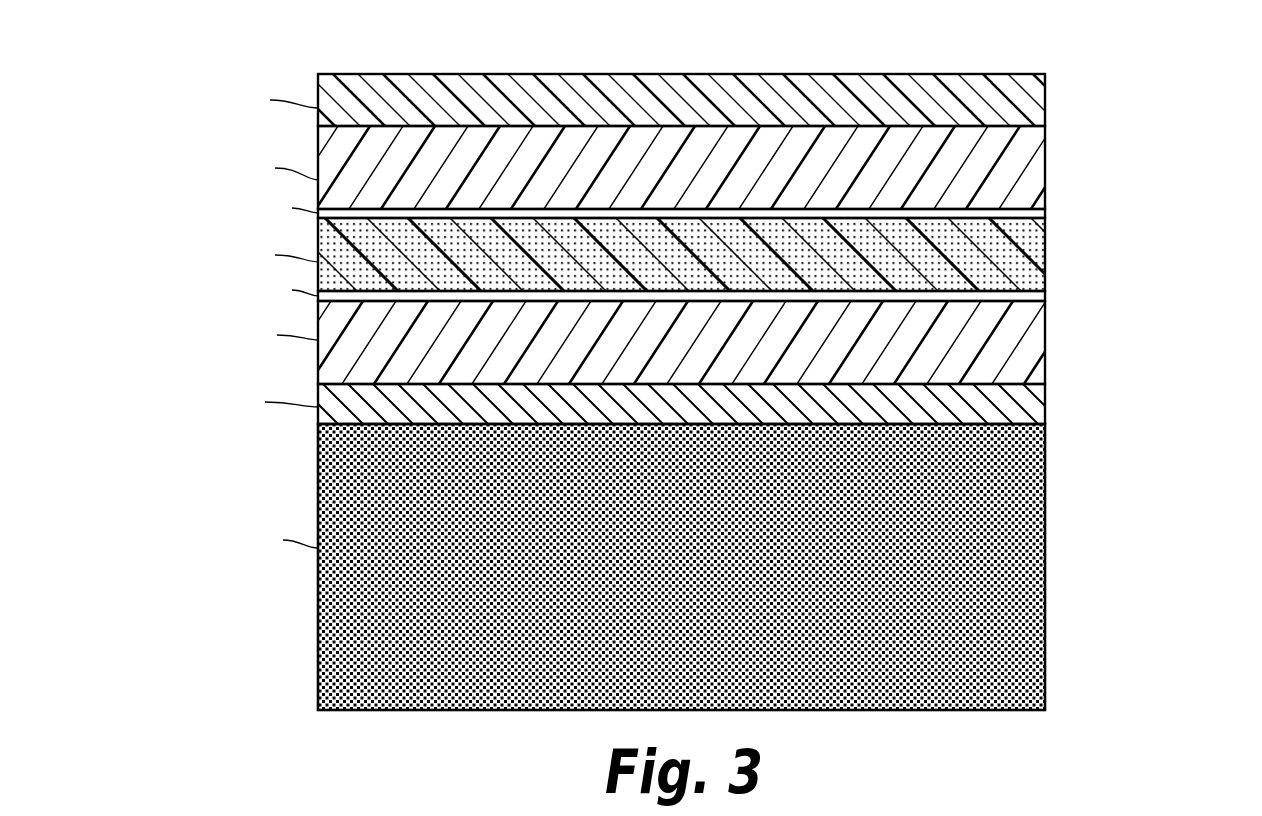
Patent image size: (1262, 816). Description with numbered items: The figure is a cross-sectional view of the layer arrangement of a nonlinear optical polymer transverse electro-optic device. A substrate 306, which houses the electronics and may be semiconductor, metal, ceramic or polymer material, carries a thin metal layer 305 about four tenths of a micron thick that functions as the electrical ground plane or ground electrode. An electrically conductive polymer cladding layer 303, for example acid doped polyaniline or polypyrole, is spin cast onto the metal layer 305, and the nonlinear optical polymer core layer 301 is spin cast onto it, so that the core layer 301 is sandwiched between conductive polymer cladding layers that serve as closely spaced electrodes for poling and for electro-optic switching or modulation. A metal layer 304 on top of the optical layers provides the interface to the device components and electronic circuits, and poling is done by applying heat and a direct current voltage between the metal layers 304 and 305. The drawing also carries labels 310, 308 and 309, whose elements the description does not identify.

The nonlinear optical polymer core layer 301 is at (1045, 83).
The passive polymer layer (2 microns) 310 is at (1045, 172).
The conductive polymer cladding layer 303 is at (1045, 215).
The metal layer 304 is at (1045, 262).
The metal layer 305 is at (1045, 298).
The substrate 306 is at (1045, 338).
The metal layer (0.4 microns) 308 is at (1045, 395).
The substrate 309 is at (1045, 556).